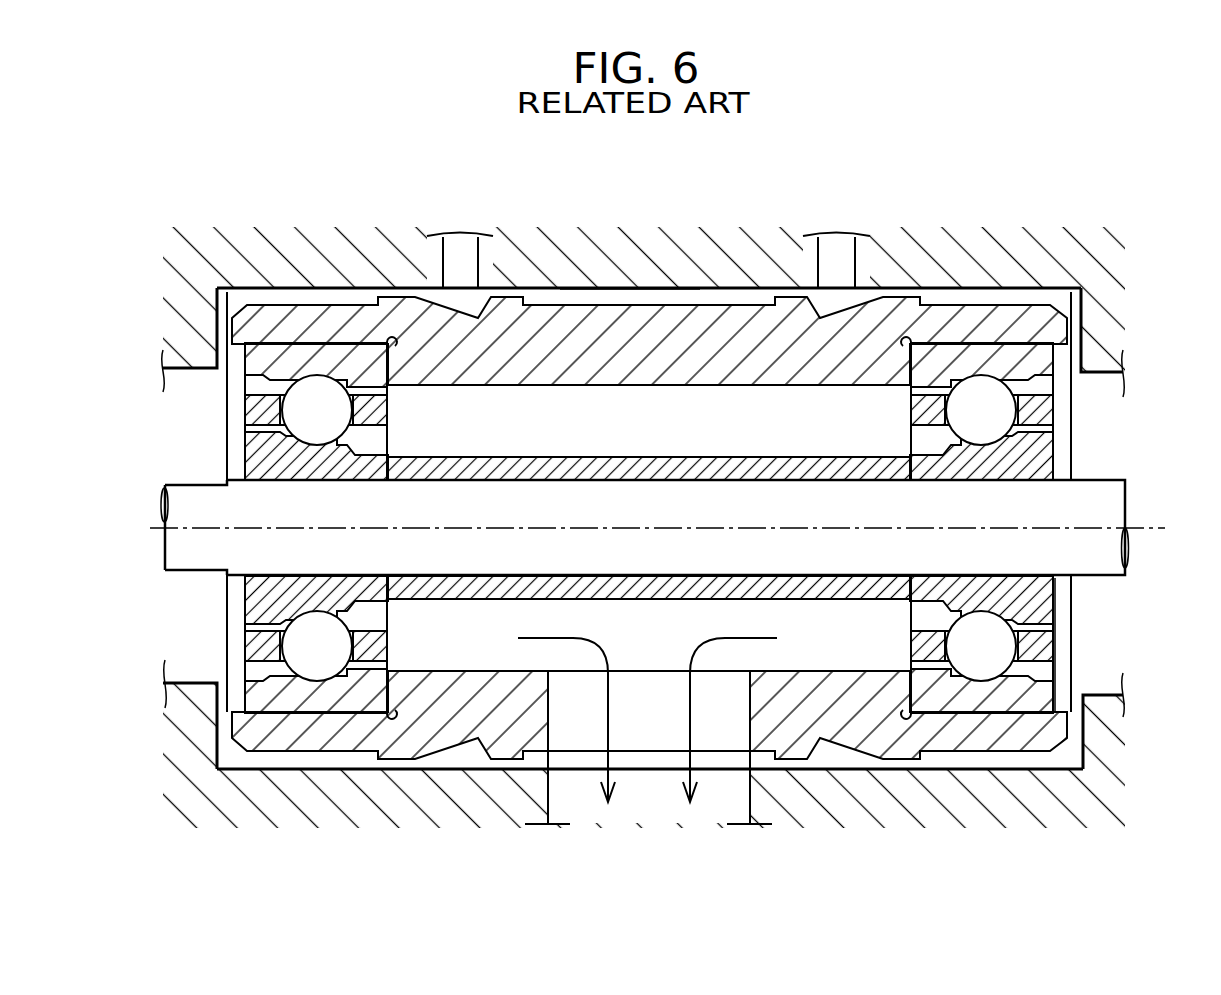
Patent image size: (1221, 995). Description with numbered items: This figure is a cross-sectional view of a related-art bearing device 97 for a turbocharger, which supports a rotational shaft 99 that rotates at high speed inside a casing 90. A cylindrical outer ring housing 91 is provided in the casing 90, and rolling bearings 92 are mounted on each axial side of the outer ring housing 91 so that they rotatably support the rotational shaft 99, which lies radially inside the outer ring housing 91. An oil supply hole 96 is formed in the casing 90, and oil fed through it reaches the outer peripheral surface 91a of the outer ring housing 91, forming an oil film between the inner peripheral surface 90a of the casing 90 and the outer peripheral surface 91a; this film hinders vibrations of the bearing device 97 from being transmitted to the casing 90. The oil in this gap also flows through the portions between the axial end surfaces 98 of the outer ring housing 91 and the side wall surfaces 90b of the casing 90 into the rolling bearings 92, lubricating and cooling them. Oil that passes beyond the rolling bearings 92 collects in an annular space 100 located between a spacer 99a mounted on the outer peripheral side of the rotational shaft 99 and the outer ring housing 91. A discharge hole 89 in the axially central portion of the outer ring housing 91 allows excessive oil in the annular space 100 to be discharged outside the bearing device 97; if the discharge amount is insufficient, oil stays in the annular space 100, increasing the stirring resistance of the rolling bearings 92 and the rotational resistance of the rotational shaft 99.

The discharge hole 89 is at (749, 717).
The casing 90 is at (920, 260).
The inner peripheral surface of the casing 90a is at (622, 291).
The side wall surfaces in the casing 90b is at (228, 292).
The outer ring housing 91 is at (743, 327).
The outer peripheral surface of the outer ring housing 91a is at (679, 310).
The rolling bearings 92 is at (328, 338).
The oil supply hole 96 is at (445, 250).
The bearing device 97 is at (1058, 688).
The axial end surfaces of the outer ring housing 98 is at (214, 337).
The rotational shaft 99 is at (1097, 477).
The spacer 99a is at (707, 468).
The annular space 100 is at (668, 434).